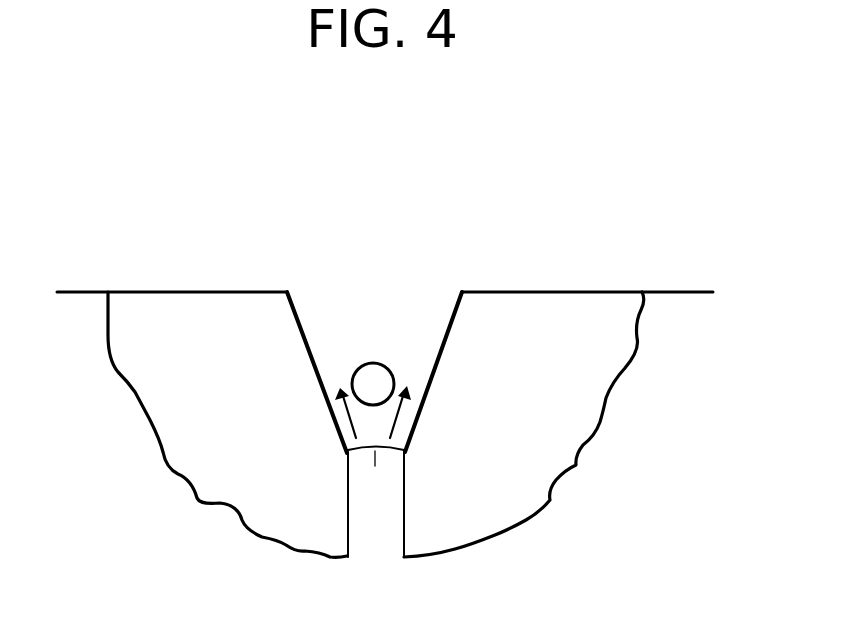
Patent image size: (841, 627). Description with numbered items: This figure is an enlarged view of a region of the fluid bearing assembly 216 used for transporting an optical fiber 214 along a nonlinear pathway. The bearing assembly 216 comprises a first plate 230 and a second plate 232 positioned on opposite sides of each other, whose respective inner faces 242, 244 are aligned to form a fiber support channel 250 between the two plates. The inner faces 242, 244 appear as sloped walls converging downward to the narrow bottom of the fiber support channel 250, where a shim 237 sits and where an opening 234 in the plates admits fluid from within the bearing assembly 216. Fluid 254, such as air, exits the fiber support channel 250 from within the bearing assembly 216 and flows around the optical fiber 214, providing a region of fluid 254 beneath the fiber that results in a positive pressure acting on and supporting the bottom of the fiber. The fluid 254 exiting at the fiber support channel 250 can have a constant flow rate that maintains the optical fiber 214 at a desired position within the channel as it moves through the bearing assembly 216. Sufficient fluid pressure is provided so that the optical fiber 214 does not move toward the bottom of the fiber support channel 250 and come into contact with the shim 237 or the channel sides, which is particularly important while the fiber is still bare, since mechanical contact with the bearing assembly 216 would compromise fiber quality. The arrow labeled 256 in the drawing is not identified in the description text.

The fluid bearing assembly 216 is at (594, 252).
The optical fiber 214 is at (390, 366).
The first plate 230 is at (147, 388).
The second plate 232 is at (590, 445).
The opening 234 is at (347, 449).
The shim 237 is at (375, 466).
The inner face of first plate 242 is at (299, 314).
The inner face of second plate 244 is at (447, 320).
The fiber support channel 250 is at (408, 260).
The fluid 254 is at (328, 413).
The flow direction 256 is at (355, 303).